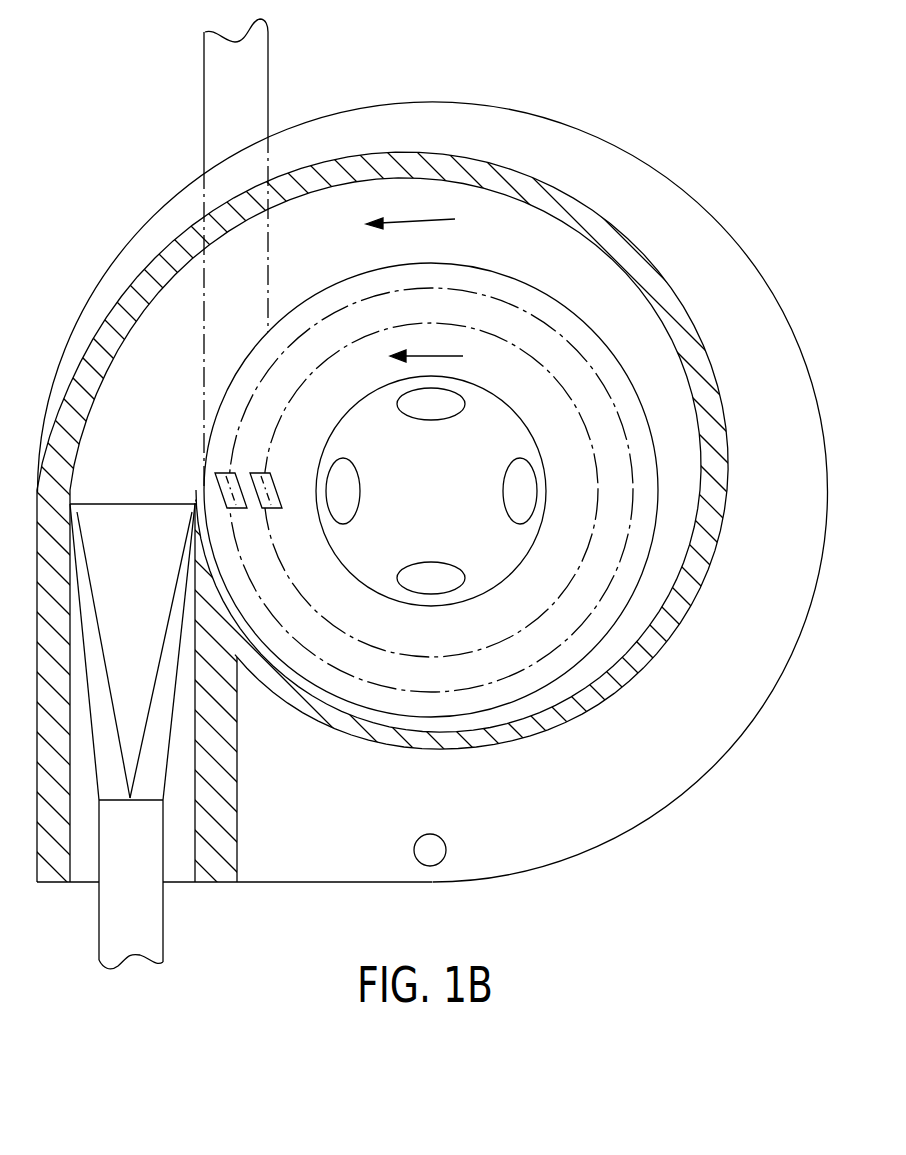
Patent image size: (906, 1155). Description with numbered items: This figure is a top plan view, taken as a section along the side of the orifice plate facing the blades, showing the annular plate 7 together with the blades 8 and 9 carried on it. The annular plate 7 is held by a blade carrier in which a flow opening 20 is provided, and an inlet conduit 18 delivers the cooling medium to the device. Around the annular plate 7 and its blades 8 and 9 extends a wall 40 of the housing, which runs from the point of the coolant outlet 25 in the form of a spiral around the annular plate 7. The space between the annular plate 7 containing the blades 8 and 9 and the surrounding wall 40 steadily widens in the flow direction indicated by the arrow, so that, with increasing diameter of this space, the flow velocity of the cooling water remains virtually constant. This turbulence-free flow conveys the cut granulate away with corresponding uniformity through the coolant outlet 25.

The annular plate 7 is at (652, 502).
The blade 8 is at (216, 480).
The blade 9 is at (250, 474).
The inlet conduit 18 is at (204, 90).
The flow opening 20 is at (434, 588).
The coolant outlet 25 is at (99, 938).
The wall 40 is at (637, 268).